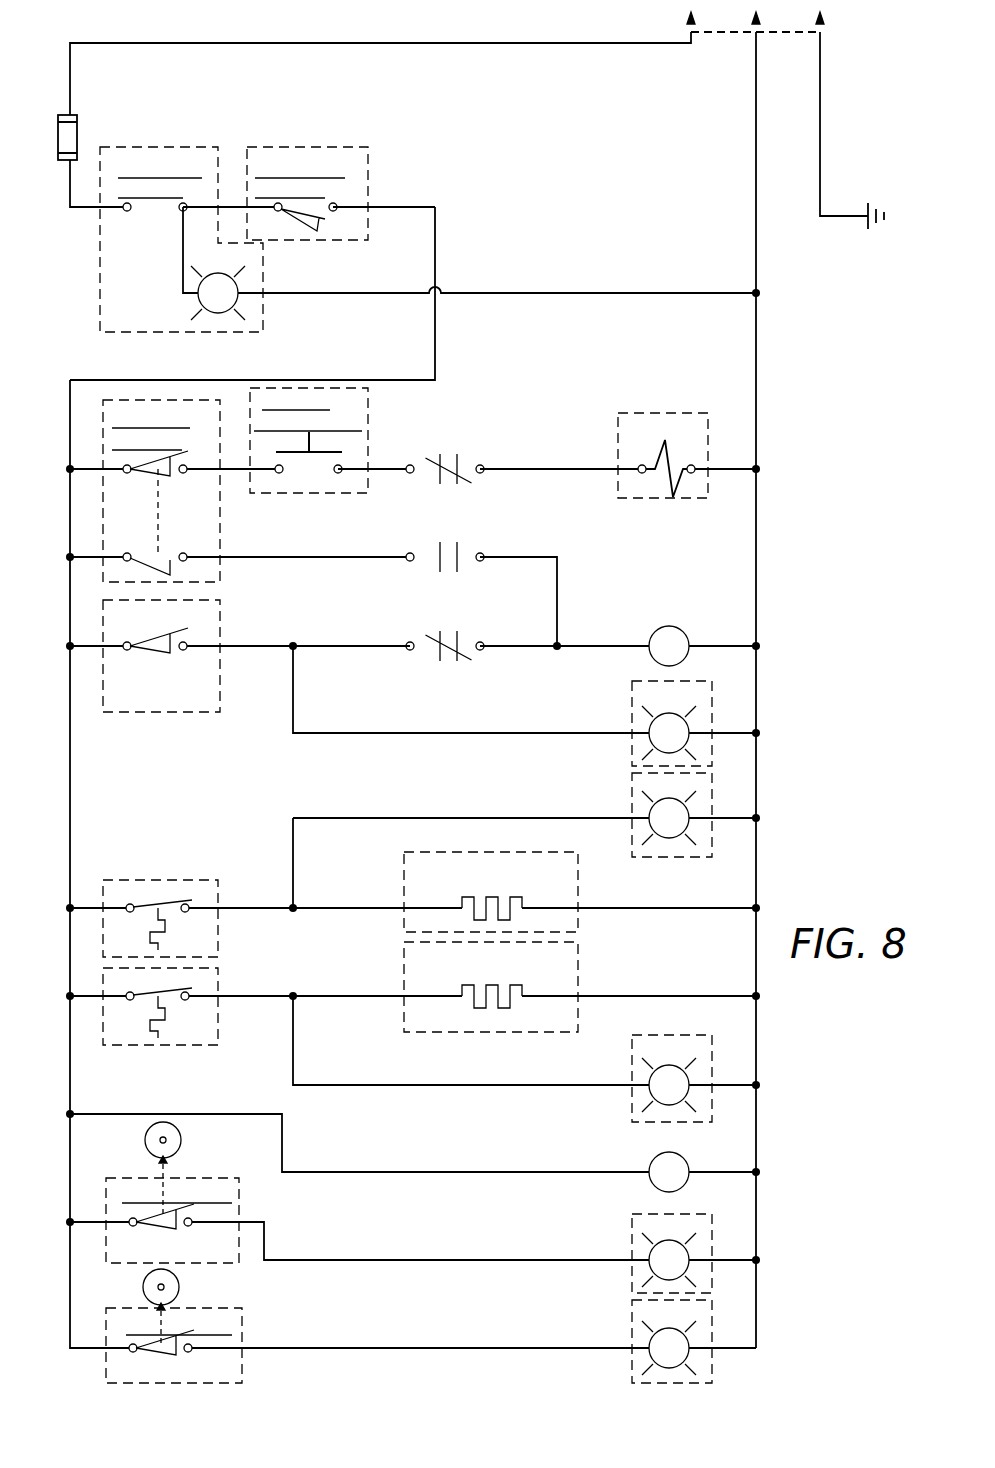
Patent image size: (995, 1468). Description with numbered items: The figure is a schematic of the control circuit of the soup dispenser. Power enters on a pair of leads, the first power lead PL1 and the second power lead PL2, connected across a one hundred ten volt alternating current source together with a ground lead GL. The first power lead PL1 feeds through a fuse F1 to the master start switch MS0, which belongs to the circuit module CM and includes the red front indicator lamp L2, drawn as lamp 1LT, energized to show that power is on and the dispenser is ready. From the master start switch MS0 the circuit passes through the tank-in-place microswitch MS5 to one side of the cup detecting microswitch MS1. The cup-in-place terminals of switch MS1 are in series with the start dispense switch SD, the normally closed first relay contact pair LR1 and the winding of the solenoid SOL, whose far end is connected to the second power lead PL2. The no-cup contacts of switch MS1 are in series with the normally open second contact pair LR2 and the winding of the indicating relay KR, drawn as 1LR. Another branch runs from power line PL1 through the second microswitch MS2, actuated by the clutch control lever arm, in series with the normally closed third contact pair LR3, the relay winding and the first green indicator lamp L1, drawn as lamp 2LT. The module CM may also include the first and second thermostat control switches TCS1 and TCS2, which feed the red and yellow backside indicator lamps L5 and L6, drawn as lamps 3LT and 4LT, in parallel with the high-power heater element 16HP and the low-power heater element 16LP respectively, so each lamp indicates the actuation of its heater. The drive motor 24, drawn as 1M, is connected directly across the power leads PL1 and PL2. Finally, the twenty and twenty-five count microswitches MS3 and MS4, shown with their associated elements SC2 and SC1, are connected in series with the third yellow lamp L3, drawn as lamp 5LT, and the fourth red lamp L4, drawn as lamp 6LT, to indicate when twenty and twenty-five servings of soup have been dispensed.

The first power lead PL1 is at (452, 45).
The second power lead PL2 is at (757, 110).
The ground lead GL is at (821, 96).
The fuse F1 is at (78, 130).
The master start switch MS0 is at (162, 270).
The tank-in-place microswitch MS5 is at (317, 152).
The circuit module CM is at (105, 235).
The lamp 1LT is at (469, 263).
The red front indicator lamp L2 is at (243, 282).
The cup detecting microswitch MS1 is at (150, 518).
The start dispense switch SD is at (349, 450).
The first relay contact pair LR1 is at (524, 457).
The second relay contact pair LR2 is at (481, 577).
The third relay contact pair LR3 is at (527, 631).
The solenoid SOL is at (687, 455).
The second microswitch MS2 is at (175, 628).
The indicating relay KR is at (702, 630).
The latching relay coil 1LR is at (671, 626).
The lamp 2LT is at (722, 706).
The first green indicator lamp L1 is at (524, 706).
The lamp 3LT is at (718, 800).
The red backside indicator lamp L5 is at (524, 840).
The first thermostat control switch TCS1 is at (188, 901).
The second thermostat control switch TCS2 is at (188, 991).
The high-power heater element 16HP is at (562, 896).
The low-power heater element 16LP is at (558, 977).
The lamp 4LT is at (703, 1030).
The yellow backside indicator lamp L6 is at (524, 1059).
The drive motor 24 is at (413, 1153).
The motor coil 1M is at (680, 1151).
The cam switch 2 SC2 is at (145, 1136).
The 20 count microswitch MS3 is at (162, 1258).
The lamp 5LT is at (694, 1253).
The third yellow lamp L3 is at (694, 1237).
The cam switch 1 SC1 is at (143, 1284).
The 25 count microswitch MS4 is at (172, 1381).
The lamp 6LT is at (735, 1377).
The fourth red lamp L4 is at (697, 1345).